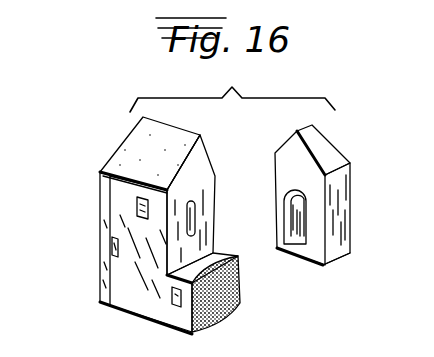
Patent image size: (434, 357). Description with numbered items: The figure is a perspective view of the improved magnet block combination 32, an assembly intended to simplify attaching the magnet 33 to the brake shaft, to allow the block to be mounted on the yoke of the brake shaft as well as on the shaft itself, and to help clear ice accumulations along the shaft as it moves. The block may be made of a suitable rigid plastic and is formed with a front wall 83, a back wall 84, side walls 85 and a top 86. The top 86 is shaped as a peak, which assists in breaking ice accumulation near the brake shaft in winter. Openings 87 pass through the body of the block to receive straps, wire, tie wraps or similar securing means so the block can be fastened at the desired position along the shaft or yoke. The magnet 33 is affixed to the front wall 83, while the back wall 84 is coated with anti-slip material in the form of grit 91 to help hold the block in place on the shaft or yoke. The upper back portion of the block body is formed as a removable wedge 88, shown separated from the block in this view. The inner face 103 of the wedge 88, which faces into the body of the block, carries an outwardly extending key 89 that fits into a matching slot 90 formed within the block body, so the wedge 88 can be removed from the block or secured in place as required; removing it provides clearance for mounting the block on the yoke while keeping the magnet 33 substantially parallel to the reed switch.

The magnet block combination 32 is at (92, 153).
The magnet 33 is at (105, 208).
The front wall 83 is at (100, 247).
The back wall 84 is at (350, 178).
The side walls 85 is at (124, 279).
The top 86 is at (140, 125).
The openings 87 is at (136, 205).
The removable wedge 88 is at (343, 210).
The key 89 is at (290, 223).
The slot 90 is at (192, 215).
The grit 91 is at (220, 304).
The inner face 103 is at (305, 250).